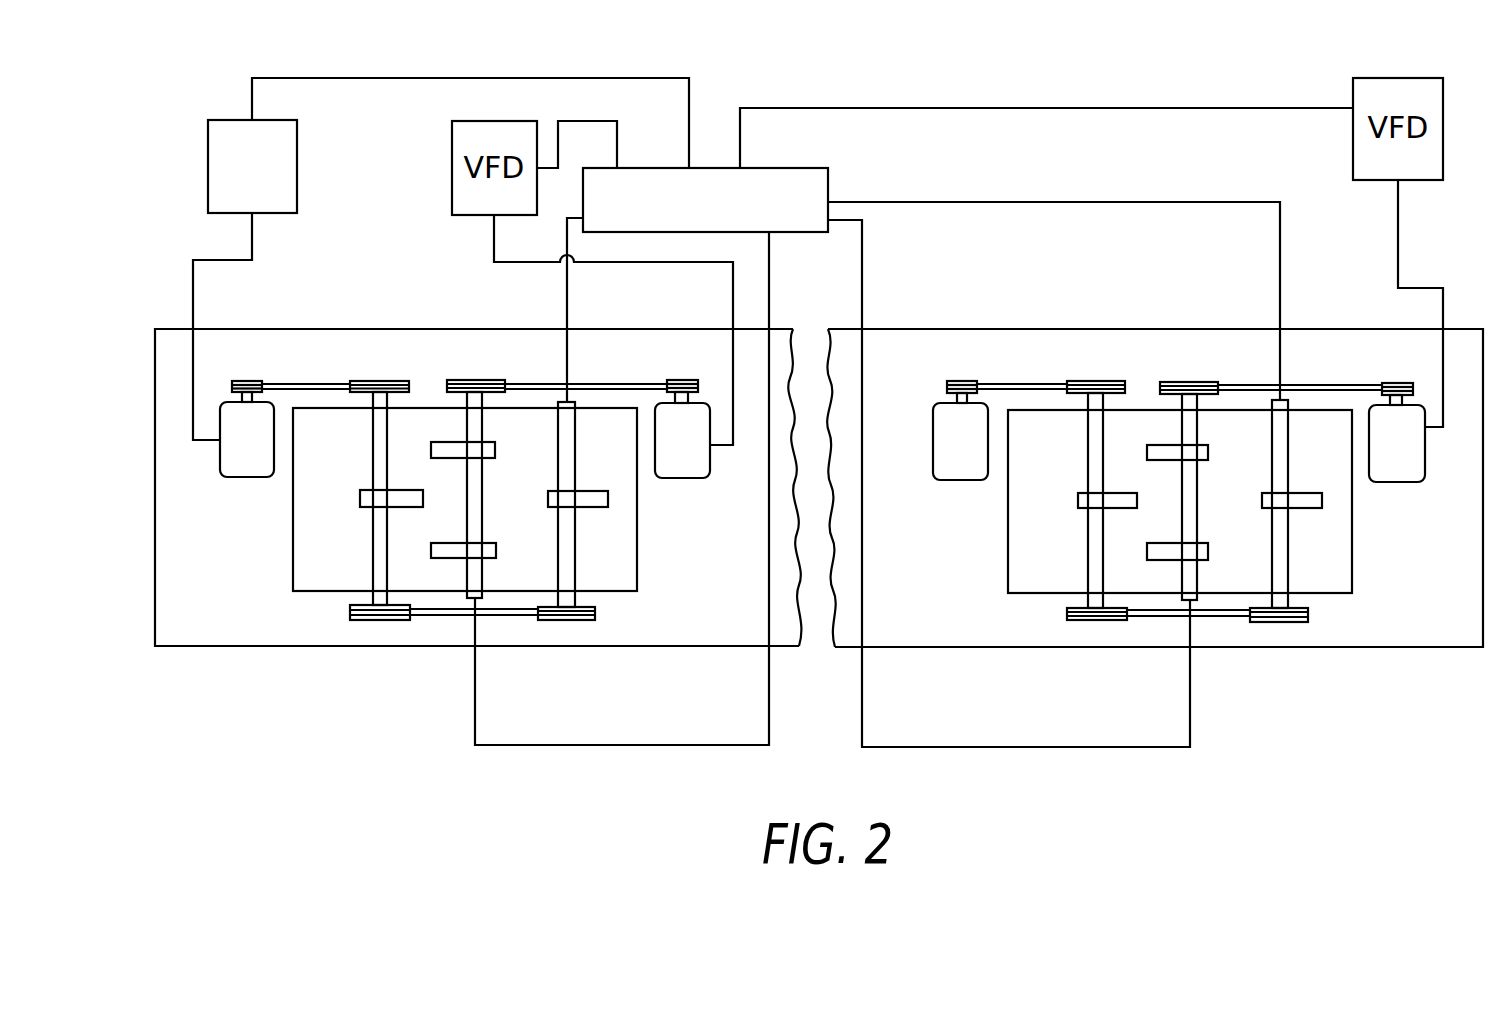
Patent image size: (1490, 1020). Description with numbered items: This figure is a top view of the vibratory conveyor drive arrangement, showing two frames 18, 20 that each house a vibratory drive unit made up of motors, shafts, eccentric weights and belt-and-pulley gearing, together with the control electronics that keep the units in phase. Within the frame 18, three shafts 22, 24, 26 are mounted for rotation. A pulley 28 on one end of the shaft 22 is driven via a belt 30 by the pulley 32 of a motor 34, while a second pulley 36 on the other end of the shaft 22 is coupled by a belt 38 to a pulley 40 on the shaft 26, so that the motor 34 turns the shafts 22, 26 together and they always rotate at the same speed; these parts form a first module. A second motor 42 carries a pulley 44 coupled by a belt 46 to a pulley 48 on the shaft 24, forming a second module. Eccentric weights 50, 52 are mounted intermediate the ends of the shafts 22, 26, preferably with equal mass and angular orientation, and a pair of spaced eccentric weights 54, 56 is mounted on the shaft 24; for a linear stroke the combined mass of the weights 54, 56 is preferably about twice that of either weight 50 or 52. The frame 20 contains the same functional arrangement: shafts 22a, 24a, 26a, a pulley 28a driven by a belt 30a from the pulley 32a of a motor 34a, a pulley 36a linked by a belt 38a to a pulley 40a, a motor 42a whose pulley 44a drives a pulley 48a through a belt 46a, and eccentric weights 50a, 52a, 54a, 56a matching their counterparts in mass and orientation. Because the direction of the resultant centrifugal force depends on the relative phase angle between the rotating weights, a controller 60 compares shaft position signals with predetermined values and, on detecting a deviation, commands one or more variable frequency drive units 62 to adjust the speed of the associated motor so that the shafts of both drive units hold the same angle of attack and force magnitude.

The frame 18 is at (292, 548).
The frame 20 is at (1352, 560).
The shaft 22 is at (373, 445).
The shaft 24 is at (478, 470).
The shaft 26 is at (575, 565).
The pulley 28 is at (398, 381).
The belt 30 is at (315, 384).
The pulley 32 is at (250, 381).
The motor 34 is at (242, 468).
The second pulley 36 is at (363, 622).
The belt 38 is at (430, 618).
The pulley 40 is at (565, 622).
The second motor 42 is at (693, 470).
The pulley 44 is at (675, 380).
The belt 46 is at (633, 387).
The pulley 48 is at (482, 380).
The eccentric weight 50 is at (365, 503).
The eccentric weight 52 is at (608, 492).
The eccentric weight 54 is at (438, 443).
The eccentric weight 56 is at (477, 547).
The controller 60 is at (710, 168).
The variable frequency drive unit 62 is at (226, 122).
The shaft 22a is at (1095, 500).
The shaft 24a is at (1189, 497).
The shaft 26a is at (1280, 504).
The pulley 28a is at (1107, 381).
The belt 30a is at (1038, 382).
The pulley 32a is at (967, 381).
The motor 34a is at (955, 473).
The second pulley 36a is at (1097, 614).
The belt 38a is at (1143, 620).
The pulley 40a is at (1279, 615).
The second motor 42a is at (1402, 473).
The pulley 44a is at (1398, 383).
The belt 46a is at (1322, 387).
The pulley 48a is at (1217, 382).
The eccentric weight 50a is at (1083, 508).
The eccentric weight 52a is at (1312, 508).
The eccentric weight 54a is at (1157, 445).
The eccentric weight 56a is at (1202, 550).